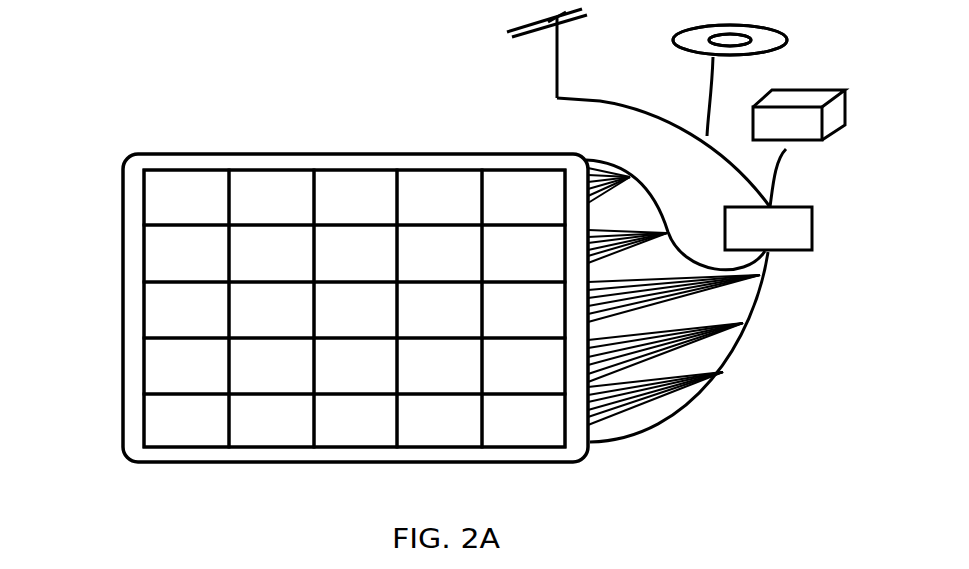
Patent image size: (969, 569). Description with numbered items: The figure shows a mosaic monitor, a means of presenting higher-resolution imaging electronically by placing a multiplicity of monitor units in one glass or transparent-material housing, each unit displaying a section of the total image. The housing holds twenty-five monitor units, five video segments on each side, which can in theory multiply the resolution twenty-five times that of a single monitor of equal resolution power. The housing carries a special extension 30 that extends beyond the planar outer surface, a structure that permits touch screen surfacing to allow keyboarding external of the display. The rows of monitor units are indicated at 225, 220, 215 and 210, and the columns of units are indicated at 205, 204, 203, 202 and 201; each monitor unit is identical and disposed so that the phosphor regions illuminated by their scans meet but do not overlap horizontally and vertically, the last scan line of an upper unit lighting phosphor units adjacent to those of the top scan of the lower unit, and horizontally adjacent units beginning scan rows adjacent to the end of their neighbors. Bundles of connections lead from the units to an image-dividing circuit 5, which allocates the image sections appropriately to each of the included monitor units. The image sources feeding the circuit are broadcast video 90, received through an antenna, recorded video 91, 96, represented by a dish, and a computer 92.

The special extension 30 is at (576, 448).
The first row of display cells 225 is at (155, 213).
The second row of display cells 220 is at (157, 267).
The third row of display cells 215 is at (157, 315).
The fourth row of display cells 210 is at (160, 372).
The first column of display cells 205 is at (188, 433).
The second column of display cells 204 is at (280, 433).
The third column of display cells 203 is at (367, 433).
The fourth column of display cells 202 is at (443, 433).
The fifth column of display cells 201 is at (517, 433).
The image-dividing circuit 5 is at (790, 242).
The computer 92 is at (808, 133).
The broadcast video 90 is at (557, 62).
The recorded video 91 is at (692, 47).
The satellite receiver 96 is at (692, 47).